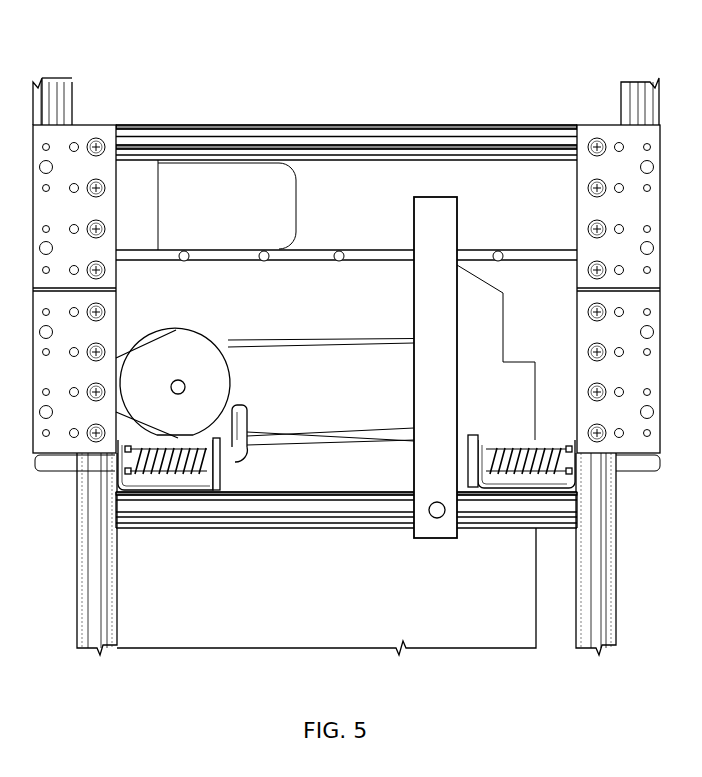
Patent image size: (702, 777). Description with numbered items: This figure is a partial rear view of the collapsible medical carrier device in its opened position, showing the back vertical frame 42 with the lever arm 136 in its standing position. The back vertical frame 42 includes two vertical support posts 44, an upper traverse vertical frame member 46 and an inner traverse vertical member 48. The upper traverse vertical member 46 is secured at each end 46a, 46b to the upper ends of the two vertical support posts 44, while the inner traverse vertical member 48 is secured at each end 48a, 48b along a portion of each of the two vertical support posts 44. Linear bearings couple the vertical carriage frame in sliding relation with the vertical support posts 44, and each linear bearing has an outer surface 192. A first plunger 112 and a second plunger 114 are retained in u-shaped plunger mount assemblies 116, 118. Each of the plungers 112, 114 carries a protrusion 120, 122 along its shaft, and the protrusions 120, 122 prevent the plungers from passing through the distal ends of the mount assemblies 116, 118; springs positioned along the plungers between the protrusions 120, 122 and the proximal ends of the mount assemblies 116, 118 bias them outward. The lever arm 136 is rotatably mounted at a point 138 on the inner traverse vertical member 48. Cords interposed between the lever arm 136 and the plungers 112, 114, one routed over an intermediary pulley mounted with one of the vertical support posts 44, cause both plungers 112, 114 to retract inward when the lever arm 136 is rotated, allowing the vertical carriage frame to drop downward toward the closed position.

The back vertical frame 42 is at (350, 137).
The vertical support posts 44 is at (107, 607).
The upper traverse vertical frame member 46 is at (233, 135).
The end of upper traverse vertical member 46a is at (565, 125).
The end of upper traverse vertical member 46b is at (127, 125).
The inner traverse vertical member 48 is at (371, 517).
The end of inner traverse vertical member 48a is at (573, 518).
The end of inner traverse vertical member 48b is at (120, 523).
The outer surface 192 is at (636, 155).
The first plunger 112 is at (515, 455).
The second plunger 114 is at (247, 418).
The u-shaped plunger mount assembly 116 is at (480, 445).
The u-shaped plunger mount assembly 118 is at (197, 435).
The protrusion 120 is at (563, 460).
The protrusion 122 is at (120, 437).
The lever arm 136 is at (468, 228).
The point 138 is at (437, 500).